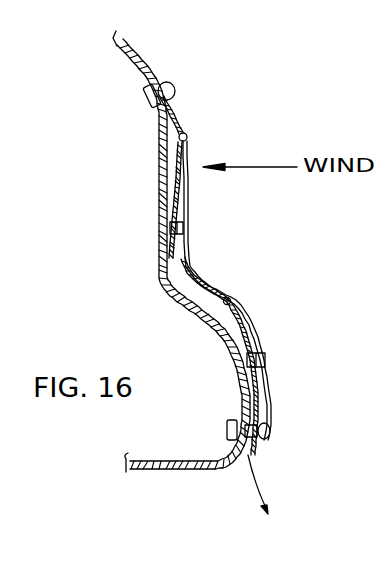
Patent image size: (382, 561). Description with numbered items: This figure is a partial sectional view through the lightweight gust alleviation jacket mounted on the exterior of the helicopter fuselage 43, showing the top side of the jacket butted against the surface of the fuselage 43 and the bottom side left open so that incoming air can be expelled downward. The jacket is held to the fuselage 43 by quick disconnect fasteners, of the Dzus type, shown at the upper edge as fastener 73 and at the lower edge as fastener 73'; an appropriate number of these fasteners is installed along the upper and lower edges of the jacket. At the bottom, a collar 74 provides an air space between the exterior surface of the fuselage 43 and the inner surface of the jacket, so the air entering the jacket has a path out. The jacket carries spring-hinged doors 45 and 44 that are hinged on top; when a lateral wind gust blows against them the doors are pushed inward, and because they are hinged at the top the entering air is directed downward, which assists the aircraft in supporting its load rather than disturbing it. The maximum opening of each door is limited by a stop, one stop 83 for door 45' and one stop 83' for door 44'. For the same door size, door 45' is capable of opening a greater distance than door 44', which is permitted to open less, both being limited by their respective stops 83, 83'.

The fuselage 43 is at (140, 50).
The quick disconnect fastener 73 is at (228, 76).
The spring-hinged door 45 is at (239, 177).
The door 45' is at (253, 247).
The stop 83 is at (144, 211).
The spring-hinged door 44 is at (252, 356).
The door 44' is at (291, 386).
The stop 83' is at (191, 344).
The quick disconnect fastener 73' is at (282, 429).
The collar 74 is at (253, 448).